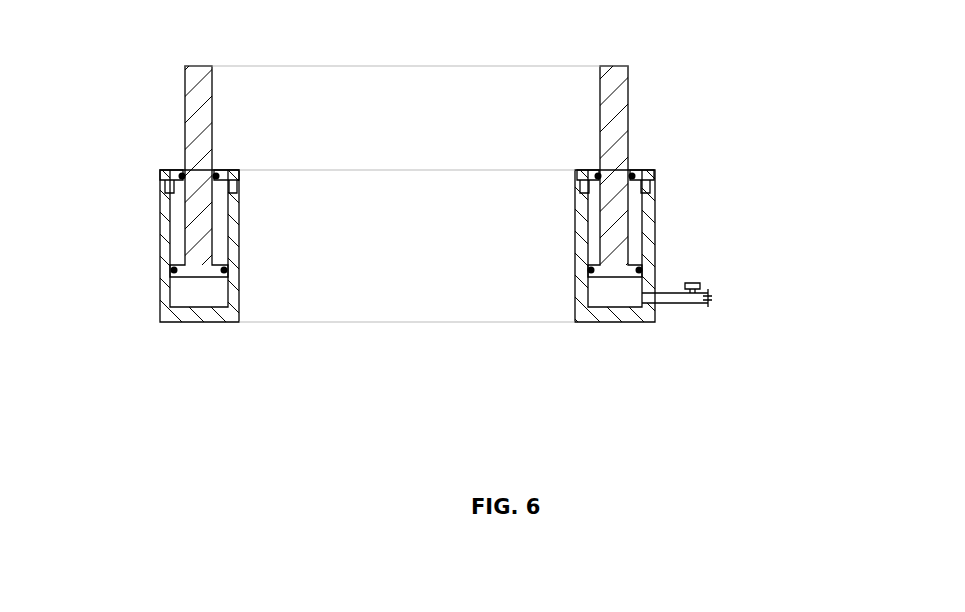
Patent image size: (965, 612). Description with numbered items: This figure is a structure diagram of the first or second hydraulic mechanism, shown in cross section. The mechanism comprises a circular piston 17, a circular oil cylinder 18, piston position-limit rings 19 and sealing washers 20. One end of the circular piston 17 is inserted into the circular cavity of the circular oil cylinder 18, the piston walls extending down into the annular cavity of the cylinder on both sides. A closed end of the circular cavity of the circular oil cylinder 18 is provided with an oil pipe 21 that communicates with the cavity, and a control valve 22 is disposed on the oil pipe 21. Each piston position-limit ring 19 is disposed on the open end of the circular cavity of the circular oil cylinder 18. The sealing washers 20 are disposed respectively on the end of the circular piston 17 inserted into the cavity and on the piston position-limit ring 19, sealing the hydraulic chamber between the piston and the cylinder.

The circular piston 17 is at (620, 101).
The circular oil cylinder 18 is at (655, 205).
The piston position-limit ring 19 is at (232, 172).
The sealing washer 20 is at (222, 272).
The oil pipe 21 is at (662, 300).
The control valve 22 is at (697, 284).